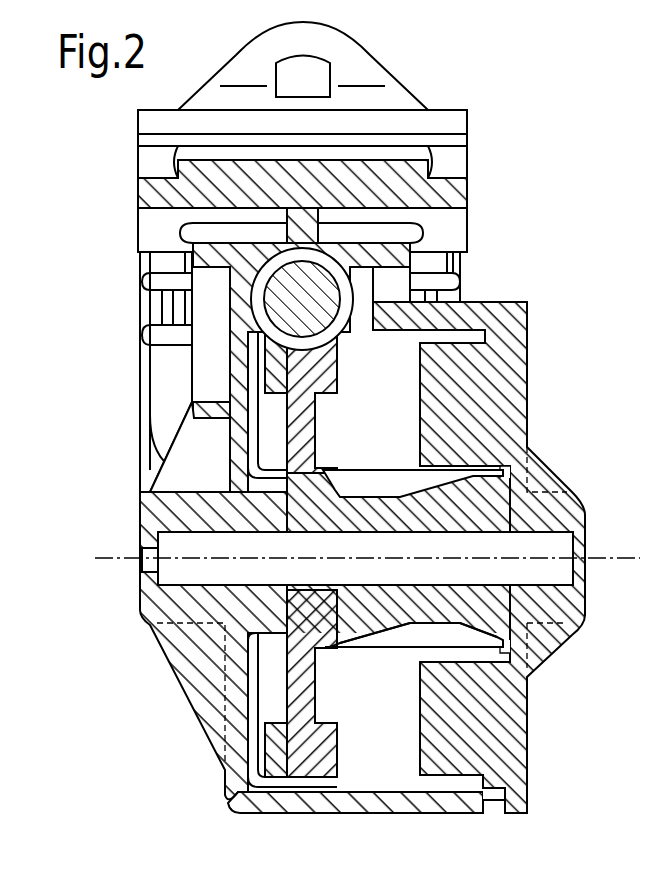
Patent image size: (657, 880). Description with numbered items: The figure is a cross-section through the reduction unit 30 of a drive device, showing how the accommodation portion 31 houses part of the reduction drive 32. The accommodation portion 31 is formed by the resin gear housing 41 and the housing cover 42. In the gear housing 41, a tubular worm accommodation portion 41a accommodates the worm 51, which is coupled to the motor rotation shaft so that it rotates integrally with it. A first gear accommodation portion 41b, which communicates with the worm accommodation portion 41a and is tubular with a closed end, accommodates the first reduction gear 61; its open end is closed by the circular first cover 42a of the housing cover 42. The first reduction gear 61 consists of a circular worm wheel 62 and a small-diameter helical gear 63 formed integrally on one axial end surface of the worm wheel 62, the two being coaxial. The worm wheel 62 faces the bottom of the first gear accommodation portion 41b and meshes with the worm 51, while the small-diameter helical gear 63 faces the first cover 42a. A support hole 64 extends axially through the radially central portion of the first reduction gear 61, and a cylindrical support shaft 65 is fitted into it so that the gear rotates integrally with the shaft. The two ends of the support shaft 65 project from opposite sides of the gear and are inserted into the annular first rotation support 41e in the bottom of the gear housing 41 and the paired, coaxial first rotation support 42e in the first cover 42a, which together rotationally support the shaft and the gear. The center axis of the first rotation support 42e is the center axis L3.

The reduction unit 30 is at (507, 78).
The gear housing 41 is at (467, 194).
The worm accommodation portion 41a is at (215, 300).
The first gear accommodation portion 41b is at (453, 810).
The first rotation support 41e is at (196, 492).
The housing cover 42 is at (527, 352).
The first cover 42a is at (527, 754).
The first rotation support 42e is at (541, 492).
The worm 51 is at (275, 313).
The accommodation portion 31 is at (205, 742).
The reduction drive 32 is at (338, 406).
The first reduction gear 61 is at (338, 748).
The worm wheel 62 is at (337, 358).
The small-diameter helical gear 63 is at (398, 637).
The support hole 64 is at (357, 568).
The support shaft 65 is at (400, 540).
The center axis L3 is at (628, 562).